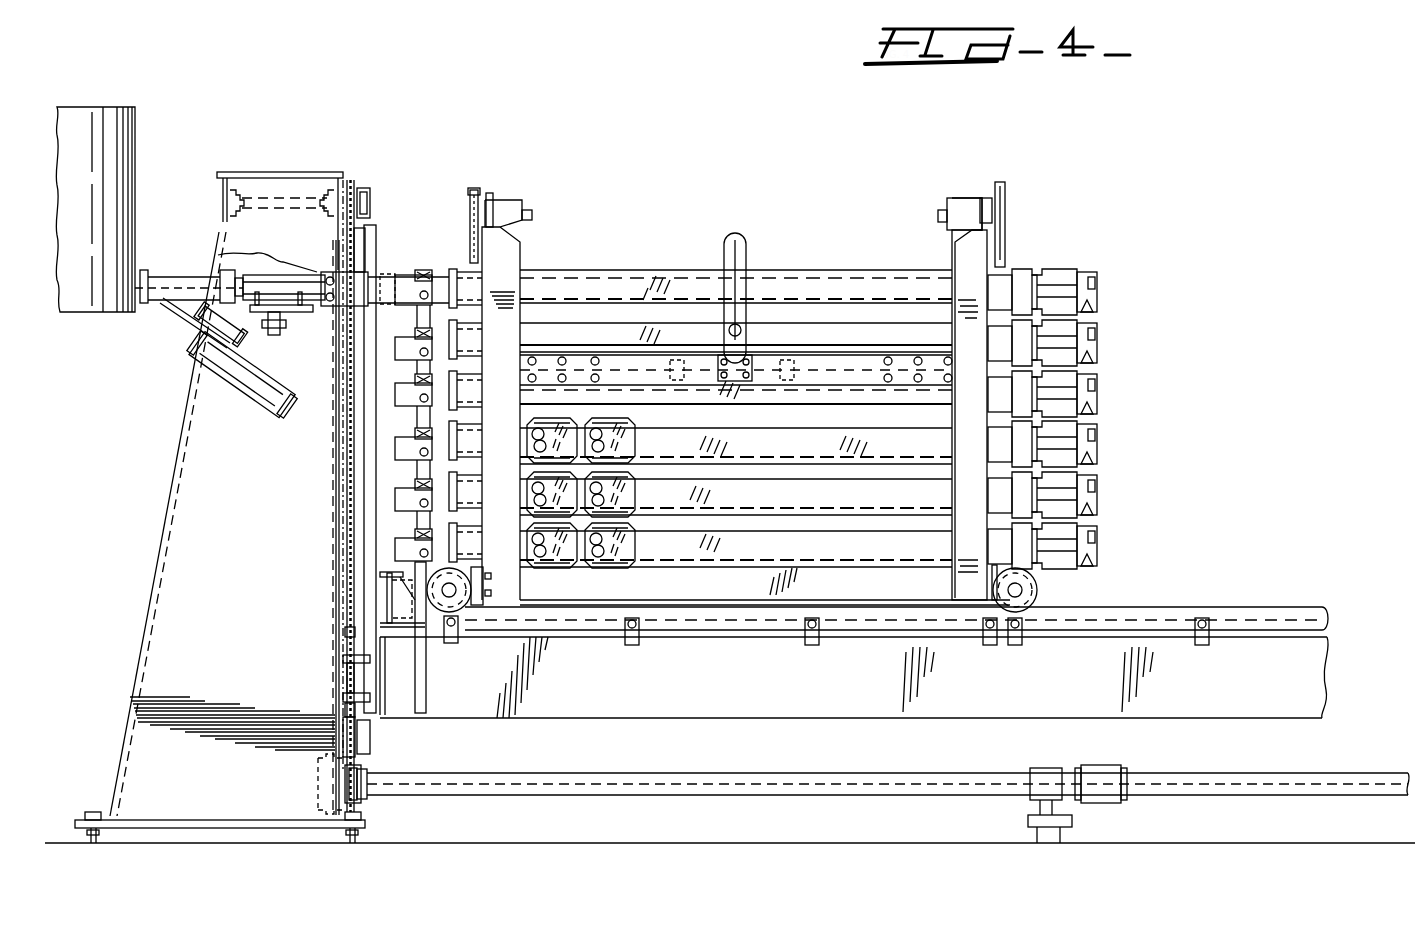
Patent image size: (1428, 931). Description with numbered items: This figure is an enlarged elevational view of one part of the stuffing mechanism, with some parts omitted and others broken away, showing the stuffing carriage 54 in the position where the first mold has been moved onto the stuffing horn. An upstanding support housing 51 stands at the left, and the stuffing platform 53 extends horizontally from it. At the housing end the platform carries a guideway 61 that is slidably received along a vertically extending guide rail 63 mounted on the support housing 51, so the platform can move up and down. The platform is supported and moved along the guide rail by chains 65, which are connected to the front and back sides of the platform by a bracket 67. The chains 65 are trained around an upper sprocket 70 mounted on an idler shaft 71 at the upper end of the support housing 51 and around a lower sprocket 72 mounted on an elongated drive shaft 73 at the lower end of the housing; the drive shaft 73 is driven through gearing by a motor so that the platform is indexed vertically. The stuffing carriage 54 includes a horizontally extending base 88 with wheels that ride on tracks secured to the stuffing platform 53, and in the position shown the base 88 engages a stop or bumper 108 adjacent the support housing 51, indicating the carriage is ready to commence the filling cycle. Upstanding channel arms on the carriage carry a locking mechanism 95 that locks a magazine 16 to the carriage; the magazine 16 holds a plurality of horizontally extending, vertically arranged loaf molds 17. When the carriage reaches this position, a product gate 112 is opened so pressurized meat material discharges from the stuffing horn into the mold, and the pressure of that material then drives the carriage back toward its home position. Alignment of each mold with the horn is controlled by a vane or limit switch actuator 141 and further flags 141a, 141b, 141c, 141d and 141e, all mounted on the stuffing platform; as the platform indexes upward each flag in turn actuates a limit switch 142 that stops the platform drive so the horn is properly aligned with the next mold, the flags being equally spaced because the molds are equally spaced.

The magazine of loaf molds 16 is at (968, 198).
The loaf molds 17 is at (790, 397).
The support housing 51 is at (200, 525).
The stuffing platform 53 is at (1285, 680).
The stuffing carriage 54 is at (998, 270).
The guideway 61 is at (366, 644).
The guide rail 63 is at (368, 426).
The chains 65 is at (350, 455).
The bracket 67 is at (345, 680).
The sprocket 70 is at (368, 190).
The idler shaft 71 is at (346, 190).
The sprocket 72 is at (360, 800).
The drive shaft 73 is at (540, 790).
The base 88 is at (842, 582).
The locking mechanism 95 is at (748, 350).
The stop or bumper 108 is at (390, 568).
The product gate 112 is at (192, 318).
The vane or limit switch actuator 141 is at (408, 290).
The flag 141a is at (400, 348).
The flag 141b is at (400, 395).
The flag 141c is at (400, 450).
The flag 141d is at (400, 500).
The flag 141e is at (400, 548).
The limit switch 142 is at (392, 288).